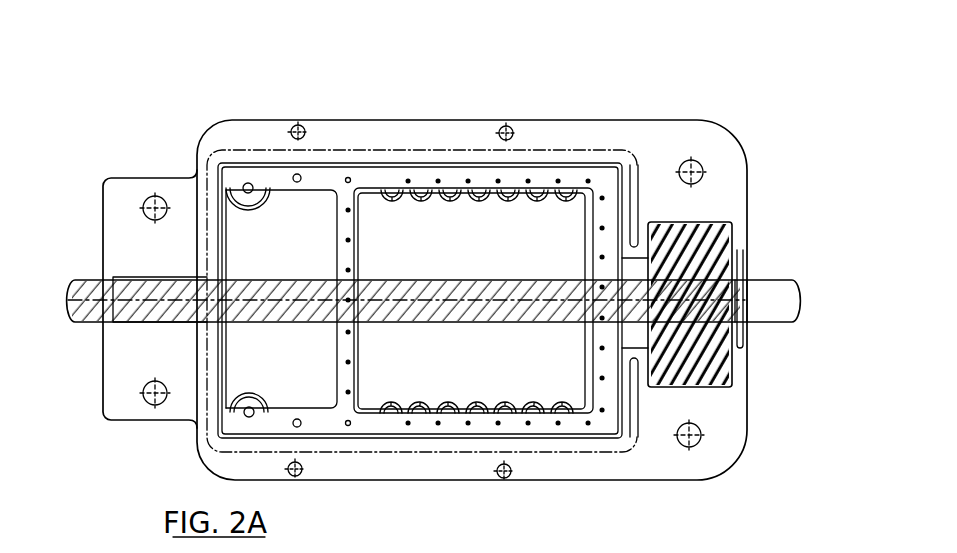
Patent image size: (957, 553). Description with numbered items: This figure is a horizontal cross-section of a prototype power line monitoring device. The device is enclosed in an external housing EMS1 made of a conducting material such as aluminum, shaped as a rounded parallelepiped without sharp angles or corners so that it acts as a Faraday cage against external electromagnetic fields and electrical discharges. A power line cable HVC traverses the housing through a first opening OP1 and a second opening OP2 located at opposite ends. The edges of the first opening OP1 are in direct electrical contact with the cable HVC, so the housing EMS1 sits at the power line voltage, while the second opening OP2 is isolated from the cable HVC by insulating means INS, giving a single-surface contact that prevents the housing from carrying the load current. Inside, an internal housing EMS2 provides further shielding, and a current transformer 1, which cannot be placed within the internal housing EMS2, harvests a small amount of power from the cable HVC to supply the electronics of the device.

The current transformer 1 is at (298, 213).
The external housing EMS1 is at (575, 120).
The internal housing EMS2 is at (452, 182).
The insulating means INS is at (730, 226).
The power line cable HVC is at (767, 280).
The first opening OP1 is at (103, 322).
The second opening OP2 is at (753, 322).